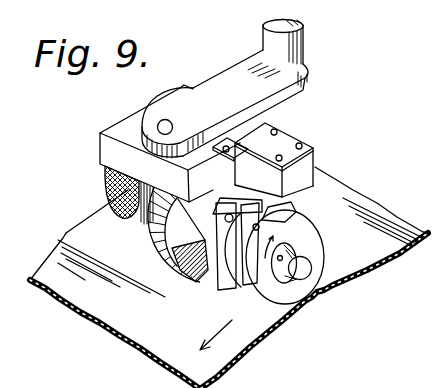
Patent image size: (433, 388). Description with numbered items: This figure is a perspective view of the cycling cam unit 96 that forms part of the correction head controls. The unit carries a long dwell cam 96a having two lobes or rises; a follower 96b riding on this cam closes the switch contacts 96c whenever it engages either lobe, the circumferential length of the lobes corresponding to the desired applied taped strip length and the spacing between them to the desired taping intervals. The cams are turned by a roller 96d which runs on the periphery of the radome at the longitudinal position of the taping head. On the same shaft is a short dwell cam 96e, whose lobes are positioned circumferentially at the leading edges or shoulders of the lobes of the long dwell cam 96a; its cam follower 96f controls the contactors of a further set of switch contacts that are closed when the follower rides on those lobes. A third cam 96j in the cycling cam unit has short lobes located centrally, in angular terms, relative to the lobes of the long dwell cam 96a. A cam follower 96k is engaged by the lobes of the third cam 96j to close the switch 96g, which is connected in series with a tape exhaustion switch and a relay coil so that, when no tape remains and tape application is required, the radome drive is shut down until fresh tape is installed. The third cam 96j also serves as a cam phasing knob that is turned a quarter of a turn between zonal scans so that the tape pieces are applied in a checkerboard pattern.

The cycling cam unit 96 is at (193, 308).
The long dwell cam 96a is at (305, 237).
The follower 96b is at (295, 205).
The switch contacts 96c is at (305, 163).
The roller 96d is at (172, 240).
The short dwell cam 96e is at (233, 280).
The cam follower 96f is at (215, 212).
The switch 96g is at (293, 147).
The third cam 96j is at (105, 190).
The cam follower 96k is at (293, 147).